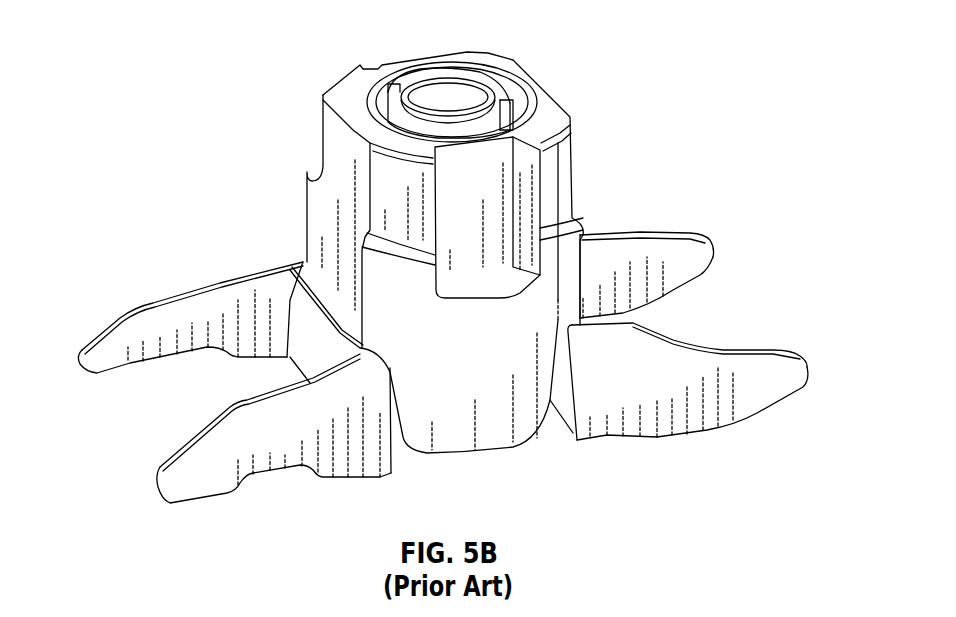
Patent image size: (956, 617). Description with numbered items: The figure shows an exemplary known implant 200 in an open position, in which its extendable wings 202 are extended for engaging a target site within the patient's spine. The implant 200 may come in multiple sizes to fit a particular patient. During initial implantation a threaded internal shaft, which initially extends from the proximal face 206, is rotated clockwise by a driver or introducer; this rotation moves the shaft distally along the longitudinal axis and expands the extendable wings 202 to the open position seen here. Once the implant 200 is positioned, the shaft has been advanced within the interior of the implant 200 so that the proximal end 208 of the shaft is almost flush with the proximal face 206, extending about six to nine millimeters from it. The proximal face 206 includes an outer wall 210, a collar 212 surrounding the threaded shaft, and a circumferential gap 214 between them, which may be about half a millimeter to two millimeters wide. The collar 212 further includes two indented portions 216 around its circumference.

The implant 200 is at (698, 171).
The extendable wings 202 is at (703, 250).
The proximal face 206 is at (543, 117).
The proximal end 208 is at (437, 87).
The outer wall 210 is at (507, 67).
The collar 212 is at (392, 120).
The circumferential gap 214 is at (377, 107).
The indented portions 216 is at (403, 87).